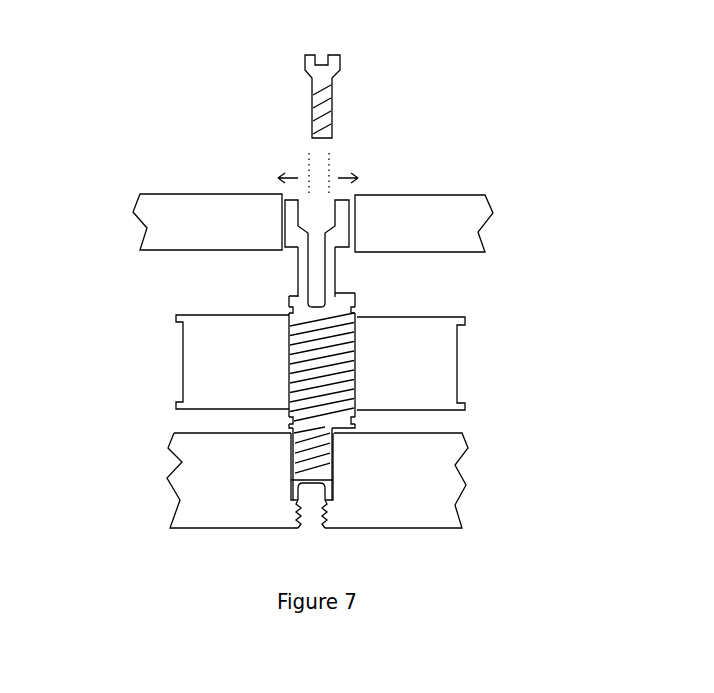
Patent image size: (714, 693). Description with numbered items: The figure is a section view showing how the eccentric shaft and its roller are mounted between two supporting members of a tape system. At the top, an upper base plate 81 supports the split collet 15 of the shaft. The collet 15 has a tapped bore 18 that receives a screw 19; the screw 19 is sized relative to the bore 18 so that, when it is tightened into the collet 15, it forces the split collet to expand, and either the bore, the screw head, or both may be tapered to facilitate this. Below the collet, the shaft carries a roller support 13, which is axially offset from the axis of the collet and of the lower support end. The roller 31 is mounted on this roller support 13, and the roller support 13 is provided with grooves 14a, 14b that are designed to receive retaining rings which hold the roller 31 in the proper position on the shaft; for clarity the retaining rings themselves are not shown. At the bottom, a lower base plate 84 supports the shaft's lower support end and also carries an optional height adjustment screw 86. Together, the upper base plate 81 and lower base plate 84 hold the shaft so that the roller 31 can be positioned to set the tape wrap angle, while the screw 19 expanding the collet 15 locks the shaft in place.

The screw 19 is at (337, 110).
The upper base plate 81 is at (411, 193).
The collet 15 is at (295, 212).
The bore 18 is at (299, 267).
The roller support 13 is at (345, 293).
The groove 14b is at (356, 308).
The groove 14a is at (357, 418).
The roller 31 is at (193, 358).
The lower base plate 84 is at (185, 465).
The height adjustment screw 86 is at (317, 533).